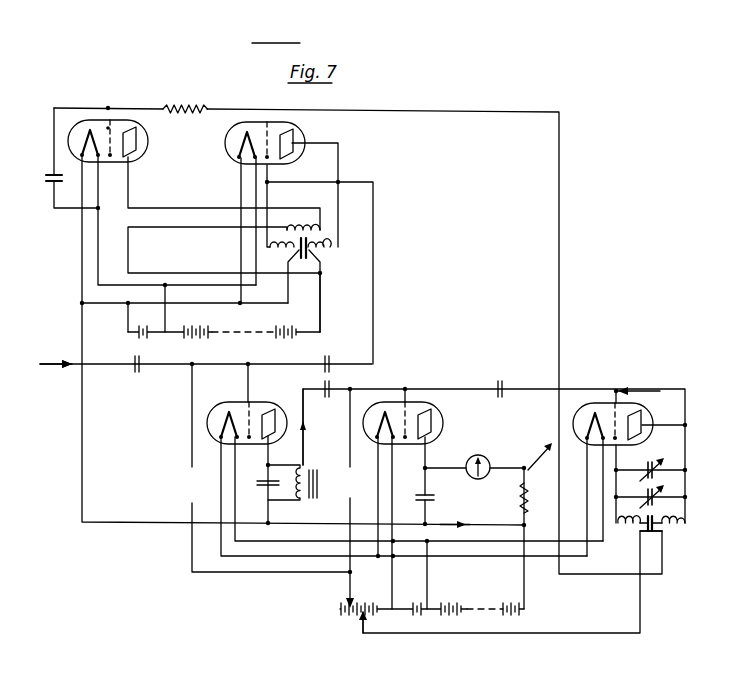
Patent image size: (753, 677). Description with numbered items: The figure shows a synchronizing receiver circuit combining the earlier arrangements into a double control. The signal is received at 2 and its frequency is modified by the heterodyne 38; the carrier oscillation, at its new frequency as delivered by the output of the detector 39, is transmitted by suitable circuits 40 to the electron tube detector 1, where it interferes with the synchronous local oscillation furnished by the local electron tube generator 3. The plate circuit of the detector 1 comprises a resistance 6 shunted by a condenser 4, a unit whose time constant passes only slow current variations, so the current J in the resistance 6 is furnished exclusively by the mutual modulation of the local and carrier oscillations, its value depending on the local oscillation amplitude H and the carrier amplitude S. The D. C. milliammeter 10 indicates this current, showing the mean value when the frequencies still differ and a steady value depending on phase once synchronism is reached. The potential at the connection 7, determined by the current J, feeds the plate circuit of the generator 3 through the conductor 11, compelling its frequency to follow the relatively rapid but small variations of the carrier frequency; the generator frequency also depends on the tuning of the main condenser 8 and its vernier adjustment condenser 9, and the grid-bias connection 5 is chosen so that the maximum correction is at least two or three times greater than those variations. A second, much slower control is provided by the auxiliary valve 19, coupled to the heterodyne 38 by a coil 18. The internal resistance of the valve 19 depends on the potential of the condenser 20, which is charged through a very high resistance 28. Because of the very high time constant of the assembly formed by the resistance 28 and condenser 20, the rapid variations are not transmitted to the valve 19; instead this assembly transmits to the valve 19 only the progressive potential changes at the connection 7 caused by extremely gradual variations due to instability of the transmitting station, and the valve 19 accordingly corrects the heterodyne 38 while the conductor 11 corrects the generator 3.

The electron tube detector 1 is at (440, 415).
The signal input 2 is at (57, 367).
The local electron tube generator 3 is at (648, 416).
The condenser 4 is at (422, 501).
The grid-bias connection 5 is at (360, 631).
The resistance 6 is at (528, 495).
The connection 7 is at (552, 461).
The main condenser 8 is at (647, 496).
The vernier adjustment condenser 9 is at (647, 469).
The D. C. milliammeter 10 is at (505, 452).
The conductor 11 is at (608, 577).
The coil 18 is at (321, 232).
The auxiliary valve 19 is at (146, 137).
The condenser 20 is at (53, 182).
The resistance 28 is at (190, 106).
The heterodyne 38 is at (345, 132).
The detector 39 is at (268, 403).
The circuits 40 is at (305, 465).
The carrier oscillation amplitude S is at (310, 427).
The local oscillation amplitude H is at (646, 389).
The current J is at (455, 515).